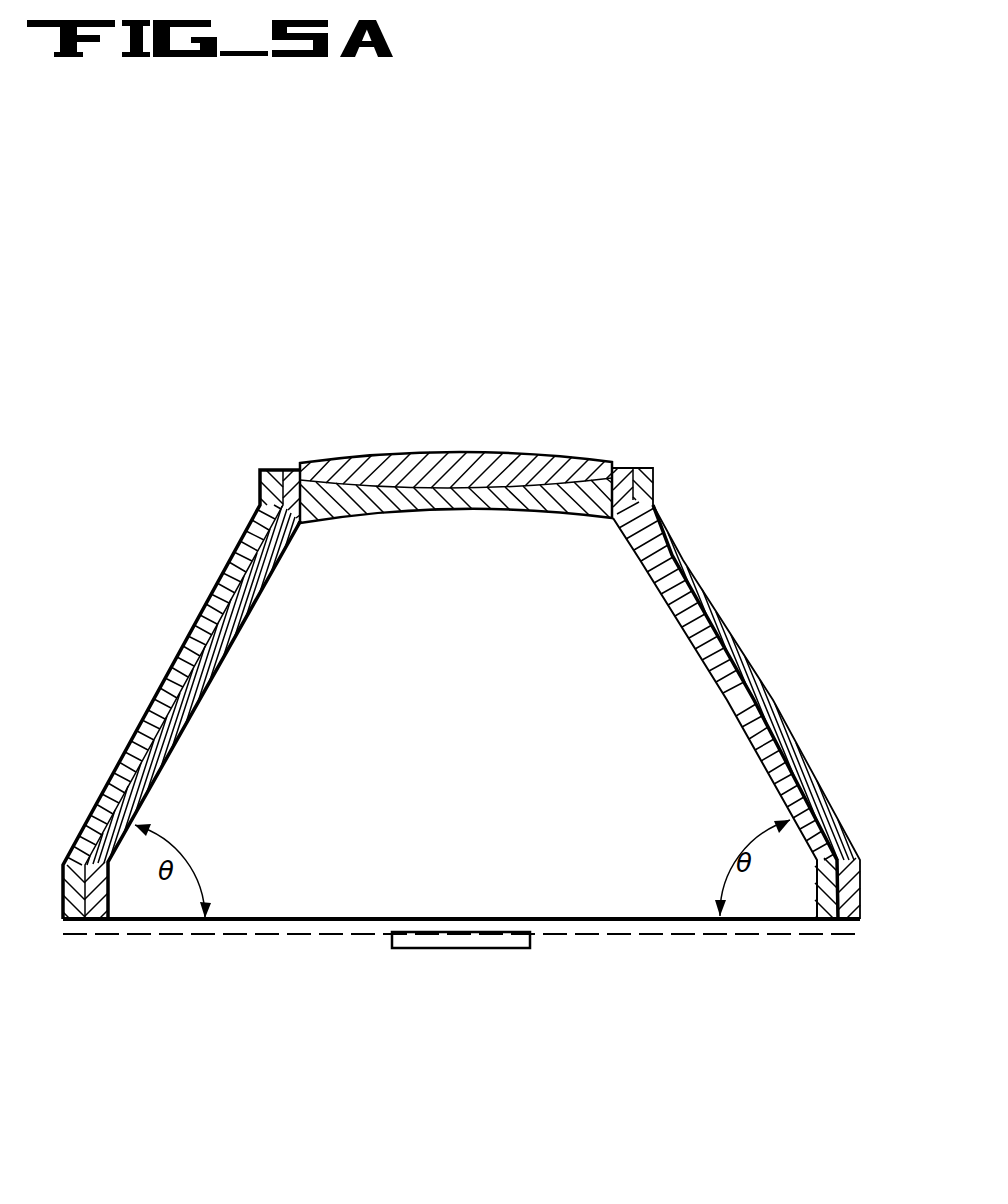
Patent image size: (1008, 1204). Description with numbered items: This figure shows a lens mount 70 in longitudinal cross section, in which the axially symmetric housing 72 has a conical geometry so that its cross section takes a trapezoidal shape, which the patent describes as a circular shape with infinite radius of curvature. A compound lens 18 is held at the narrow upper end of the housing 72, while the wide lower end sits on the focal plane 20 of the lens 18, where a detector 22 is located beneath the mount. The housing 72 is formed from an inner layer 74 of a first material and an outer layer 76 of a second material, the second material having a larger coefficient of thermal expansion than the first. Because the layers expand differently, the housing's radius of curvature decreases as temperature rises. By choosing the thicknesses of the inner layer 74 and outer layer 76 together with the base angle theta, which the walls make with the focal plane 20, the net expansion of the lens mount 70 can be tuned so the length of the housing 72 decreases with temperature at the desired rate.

The lens 18 is at (509, 490).
The focal plane 20 is at (258, 935).
The detector 22 is at (490, 948).
The lens mount 70 is at (468, 674).
The axially symmetric housing 72 is at (182, 655).
The inner layer 74 is at (760, 745).
The outer layer 76 is at (745, 688).